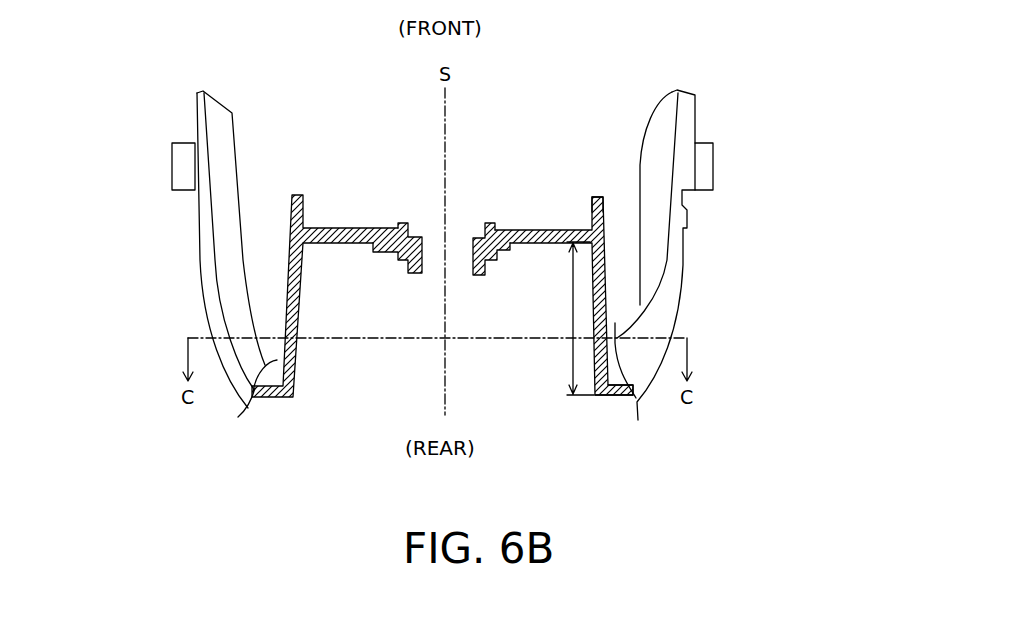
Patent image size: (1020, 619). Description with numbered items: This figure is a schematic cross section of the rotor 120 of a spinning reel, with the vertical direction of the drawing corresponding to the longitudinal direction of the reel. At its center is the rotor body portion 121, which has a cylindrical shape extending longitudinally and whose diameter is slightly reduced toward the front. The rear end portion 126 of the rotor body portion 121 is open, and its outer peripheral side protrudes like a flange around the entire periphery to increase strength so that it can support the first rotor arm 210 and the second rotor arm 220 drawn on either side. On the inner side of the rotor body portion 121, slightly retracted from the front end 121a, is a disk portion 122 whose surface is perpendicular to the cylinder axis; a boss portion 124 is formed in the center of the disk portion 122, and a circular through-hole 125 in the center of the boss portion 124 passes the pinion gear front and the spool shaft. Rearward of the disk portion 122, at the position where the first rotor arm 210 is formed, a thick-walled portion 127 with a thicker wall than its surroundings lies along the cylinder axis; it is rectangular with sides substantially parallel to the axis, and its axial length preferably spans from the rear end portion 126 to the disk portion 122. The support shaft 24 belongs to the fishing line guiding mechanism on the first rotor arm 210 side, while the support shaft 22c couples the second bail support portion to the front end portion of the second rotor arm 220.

The rotor 120 is at (603, 66).
The support shaft 22c is at (172, 168).
The support shaft 24 is at (713, 165).
The rotor body portion 121 is at (605, 217).
The front end 121a is at (592, 197).
The disk portion 122 is at (340, 228).
The boss portion 124 is at (413, 223).
The through-hole 125 is at (462, 240).
The rear end portion 126 is at (605, 399).
The thick-walled portion 127 is at (589, 296).
The first rotor arm 210 is at (678, 298).
The second rotor arm 220 is at (200, 310).